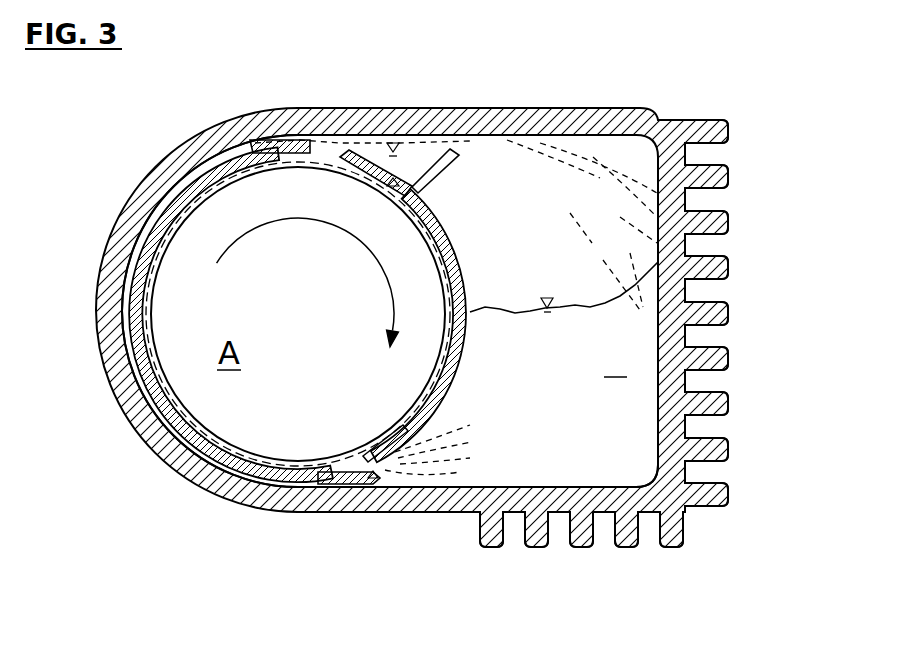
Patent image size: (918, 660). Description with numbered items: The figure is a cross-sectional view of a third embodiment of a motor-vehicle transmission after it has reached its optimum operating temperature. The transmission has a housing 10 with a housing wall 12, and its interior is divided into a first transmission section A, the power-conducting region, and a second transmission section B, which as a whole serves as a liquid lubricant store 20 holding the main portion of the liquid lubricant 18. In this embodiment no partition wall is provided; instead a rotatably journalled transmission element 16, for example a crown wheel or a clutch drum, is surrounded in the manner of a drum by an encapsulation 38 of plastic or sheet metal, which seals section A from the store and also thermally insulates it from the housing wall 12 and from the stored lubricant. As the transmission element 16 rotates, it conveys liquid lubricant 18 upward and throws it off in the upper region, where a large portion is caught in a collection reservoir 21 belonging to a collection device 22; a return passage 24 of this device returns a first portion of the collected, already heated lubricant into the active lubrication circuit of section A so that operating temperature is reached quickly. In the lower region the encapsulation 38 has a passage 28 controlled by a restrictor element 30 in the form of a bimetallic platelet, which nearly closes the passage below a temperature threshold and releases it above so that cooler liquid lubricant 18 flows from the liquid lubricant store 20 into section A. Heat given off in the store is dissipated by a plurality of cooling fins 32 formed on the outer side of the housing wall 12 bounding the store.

The housing 10 is at (128, 425).
The housing wall 12 is at (152, 442).
The transmission element 16 is at (178, 219).
The liquid lubricant 18 is at (415, 165).
The liquid lubricant store 20 is at (627, 457).
The collection reservoir 21 is at (390, 182).
The collection device 22 is at (460, 180).
The return passage 24 is at (390, 186).
The passage 28 is at (378, 470).
The restrictor element 30 is at (375, 457).
The cooling fins 32 is at (733, 307).
The encapsulation 38 is at (208, 470).